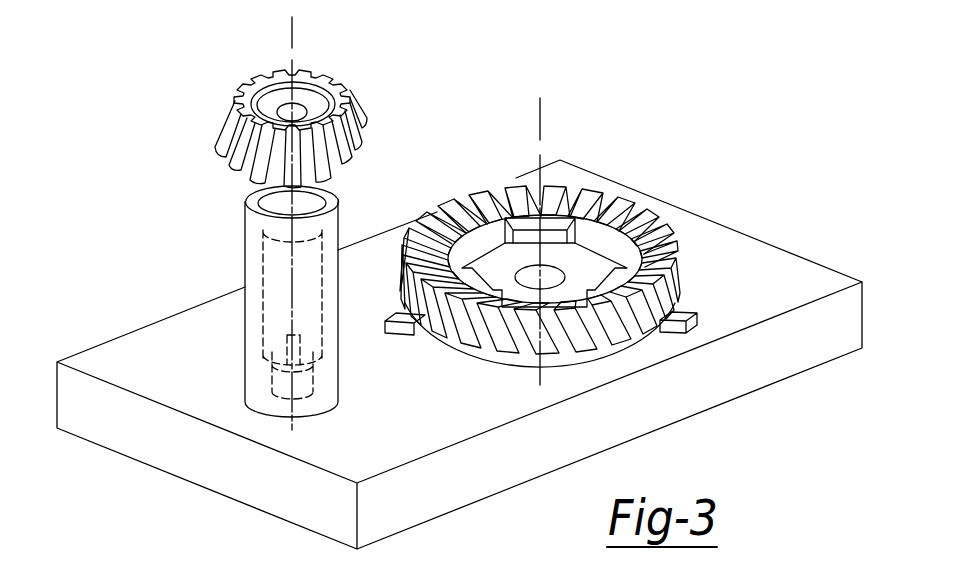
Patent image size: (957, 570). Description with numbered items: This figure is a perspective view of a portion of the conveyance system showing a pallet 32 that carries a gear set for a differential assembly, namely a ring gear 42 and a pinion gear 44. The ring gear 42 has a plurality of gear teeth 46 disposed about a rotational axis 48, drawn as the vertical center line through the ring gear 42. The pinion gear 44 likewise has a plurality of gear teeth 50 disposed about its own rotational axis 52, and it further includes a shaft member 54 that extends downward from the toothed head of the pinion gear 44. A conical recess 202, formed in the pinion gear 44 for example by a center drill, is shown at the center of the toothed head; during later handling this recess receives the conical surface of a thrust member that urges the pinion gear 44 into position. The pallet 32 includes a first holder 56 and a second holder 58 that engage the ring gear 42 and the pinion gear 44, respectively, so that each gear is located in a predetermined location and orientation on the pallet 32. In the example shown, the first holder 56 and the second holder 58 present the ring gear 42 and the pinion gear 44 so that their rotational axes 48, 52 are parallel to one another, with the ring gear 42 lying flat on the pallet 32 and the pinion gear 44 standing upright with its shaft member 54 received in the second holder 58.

The pallet 32 is at (697, 393).
The ring gear 42 is at (557, 269).
The pinion gear 44 is at (279, 106).
The gear teeth 46 is at (505, 188).
The rotational axis 48 is at (545, 138).
The gear teeth 50 is at (367, 155).
The rotational axis 52 is at (281, 50).
The shaft member 54 is at (257, 301).
The first holder 56 is at (578, 265).
The second holder 58 is at (246, 334).
The conical recess 202 is at (300, 108).